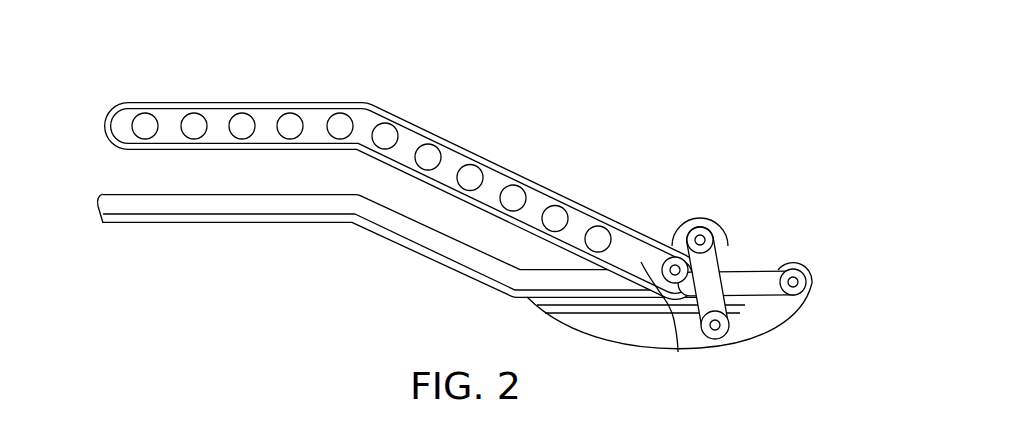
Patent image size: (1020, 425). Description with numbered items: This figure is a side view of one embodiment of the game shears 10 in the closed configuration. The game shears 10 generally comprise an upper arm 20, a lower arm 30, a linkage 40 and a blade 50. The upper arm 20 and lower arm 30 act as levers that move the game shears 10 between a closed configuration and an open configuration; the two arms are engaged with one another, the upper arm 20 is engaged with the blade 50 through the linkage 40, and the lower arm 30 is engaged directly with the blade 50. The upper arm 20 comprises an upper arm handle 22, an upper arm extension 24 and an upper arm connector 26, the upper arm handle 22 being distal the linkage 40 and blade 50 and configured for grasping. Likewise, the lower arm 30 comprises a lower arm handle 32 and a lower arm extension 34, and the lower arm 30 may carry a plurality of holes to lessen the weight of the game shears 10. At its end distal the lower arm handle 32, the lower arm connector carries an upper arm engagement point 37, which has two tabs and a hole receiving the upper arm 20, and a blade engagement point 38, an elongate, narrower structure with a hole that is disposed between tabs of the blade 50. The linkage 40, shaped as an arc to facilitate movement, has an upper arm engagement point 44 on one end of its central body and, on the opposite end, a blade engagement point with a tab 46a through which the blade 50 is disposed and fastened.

The game shears 10 is at (540, 62).
The upper arm 20 is at (96, 127).
The upper arm handle 22 is at (388, 72).
The upper arm extension 24 is at (640, 233).
The upper arm connector 26 is at (689, 218).
The lower arm 30 is at (85, 211).
The lower arm handle 32 is at (107, 229).
The lower arm extension 34 is at (653, 338).
The upper arm engagement point 37 is at (678, 352).
The blade engagement point 38 is at (814, 281).
The linkage 40 is at (728, 251).
The upper arm engagement point 44 is at (713, 227).
The tab 46a is at (724, 274).
The blade 50 is at (775, 345).